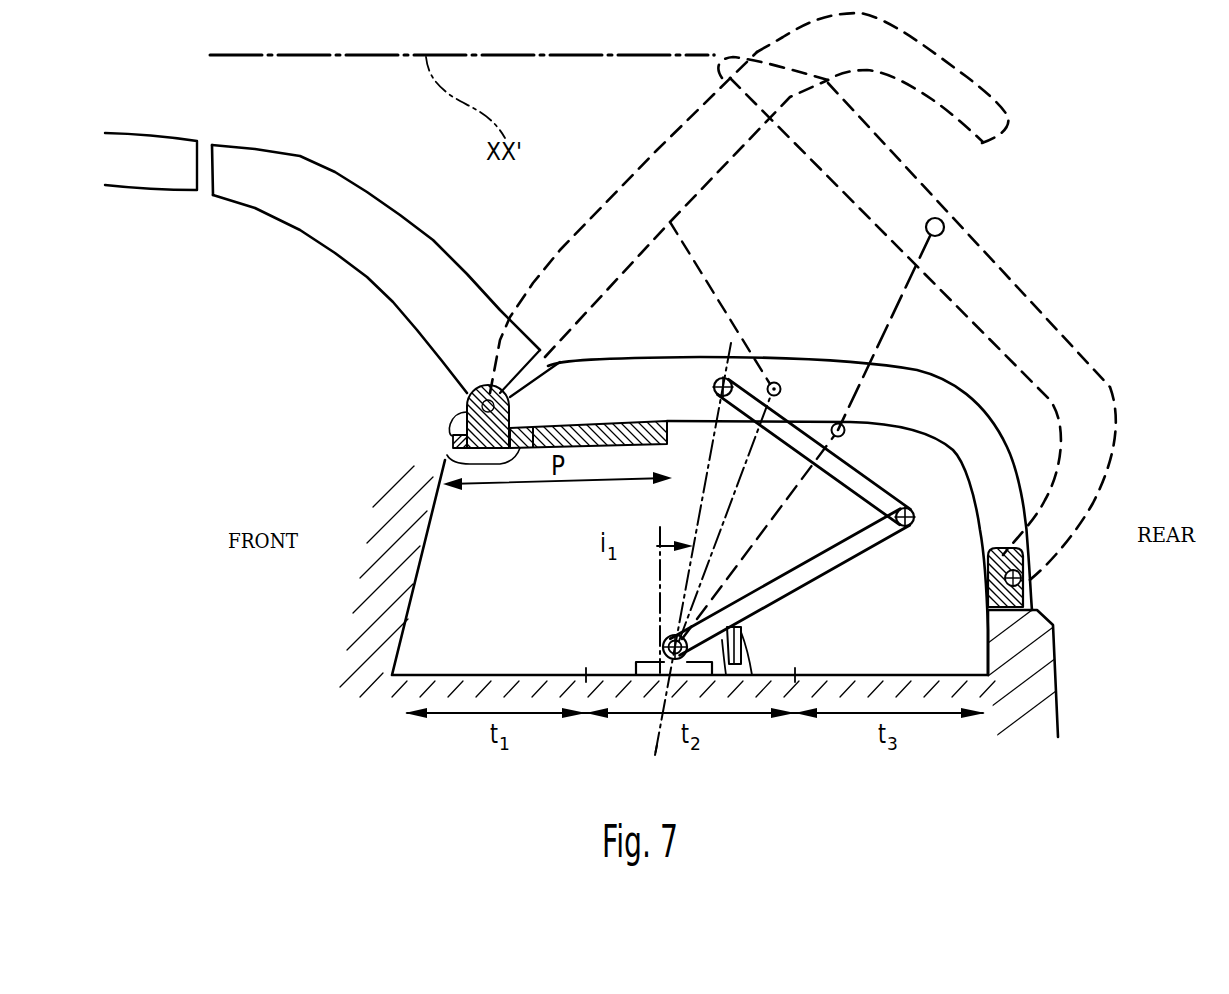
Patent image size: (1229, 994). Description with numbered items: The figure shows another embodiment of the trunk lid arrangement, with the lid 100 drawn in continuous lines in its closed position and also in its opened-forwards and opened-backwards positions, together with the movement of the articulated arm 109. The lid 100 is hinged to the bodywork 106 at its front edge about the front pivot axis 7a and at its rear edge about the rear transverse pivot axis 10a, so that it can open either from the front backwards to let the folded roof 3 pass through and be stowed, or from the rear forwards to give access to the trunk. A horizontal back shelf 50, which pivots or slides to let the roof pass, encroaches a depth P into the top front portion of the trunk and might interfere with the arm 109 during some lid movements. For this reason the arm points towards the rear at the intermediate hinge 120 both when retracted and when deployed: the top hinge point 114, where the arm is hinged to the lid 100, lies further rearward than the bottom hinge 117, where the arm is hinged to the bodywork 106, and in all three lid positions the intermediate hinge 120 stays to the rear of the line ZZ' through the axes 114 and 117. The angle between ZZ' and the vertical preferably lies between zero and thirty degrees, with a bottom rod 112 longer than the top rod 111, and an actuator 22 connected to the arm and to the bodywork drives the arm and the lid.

The folded roof 3 is at (370, 182).
The front pivot axis 7a is at (460, 412).
The back shelf 50 is at (445, 459).
The lid 100 is at (641, 375).
The top hinge point 114 is at (717, 380).
The intermediate hinge 120 is at (781, 386).
The top rod 111 is at (853, 484).
The bottom rod 112 is at (832, 558).
The articulated arm 109 is at (890, 555).
The bottom hinge 117 is at (662, 646).
The actuator 22 is at (744, 633).
The rear transverse pivot axis 10a is at (1024, 578).
The bodywork 106 is at (623, 778).